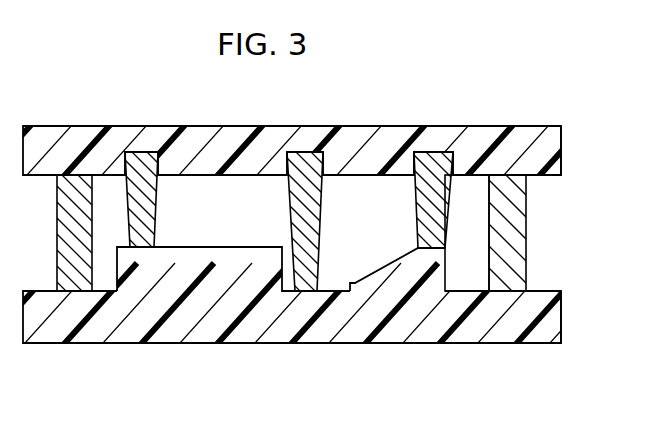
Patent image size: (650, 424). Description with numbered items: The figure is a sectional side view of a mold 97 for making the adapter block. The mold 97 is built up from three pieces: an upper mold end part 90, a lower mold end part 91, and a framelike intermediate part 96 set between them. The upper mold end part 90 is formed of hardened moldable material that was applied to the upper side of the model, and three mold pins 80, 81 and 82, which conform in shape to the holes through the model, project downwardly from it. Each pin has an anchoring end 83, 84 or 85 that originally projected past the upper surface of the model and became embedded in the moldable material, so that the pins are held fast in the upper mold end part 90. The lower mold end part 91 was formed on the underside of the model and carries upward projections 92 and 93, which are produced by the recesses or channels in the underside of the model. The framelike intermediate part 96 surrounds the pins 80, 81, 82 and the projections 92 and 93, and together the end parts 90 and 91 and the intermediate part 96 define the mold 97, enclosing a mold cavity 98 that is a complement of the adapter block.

The mold pin 80 is at (307, 222).
The mold pin 81 is at (142, 216).
The mold pin 82 is at (435, 218).
The anchoring end 83 is at (303, 160).
The anchoring end 84 is at (151, 160).
The anchoring end 85 is at (433, 163).
The upper mold end part 90 is at (229, 143).
The lower mold end part 91 is at (280, 328).
The upward projection 92 is at (240, 263).
The upward projection 93 is at (390, 270).
The framelike intermediate part 96 is at (512, 232).
The mold 97 is at (579, 159).
The mold cavity 98 is at (468, 247).